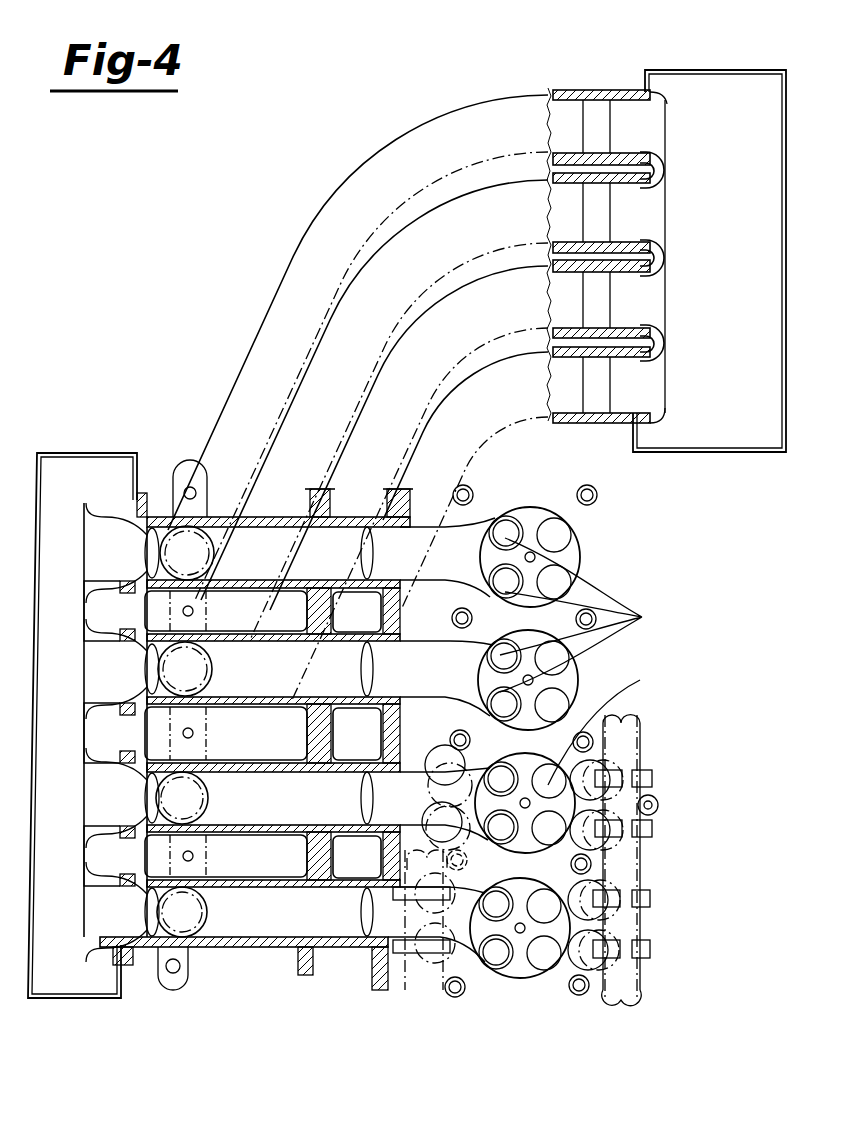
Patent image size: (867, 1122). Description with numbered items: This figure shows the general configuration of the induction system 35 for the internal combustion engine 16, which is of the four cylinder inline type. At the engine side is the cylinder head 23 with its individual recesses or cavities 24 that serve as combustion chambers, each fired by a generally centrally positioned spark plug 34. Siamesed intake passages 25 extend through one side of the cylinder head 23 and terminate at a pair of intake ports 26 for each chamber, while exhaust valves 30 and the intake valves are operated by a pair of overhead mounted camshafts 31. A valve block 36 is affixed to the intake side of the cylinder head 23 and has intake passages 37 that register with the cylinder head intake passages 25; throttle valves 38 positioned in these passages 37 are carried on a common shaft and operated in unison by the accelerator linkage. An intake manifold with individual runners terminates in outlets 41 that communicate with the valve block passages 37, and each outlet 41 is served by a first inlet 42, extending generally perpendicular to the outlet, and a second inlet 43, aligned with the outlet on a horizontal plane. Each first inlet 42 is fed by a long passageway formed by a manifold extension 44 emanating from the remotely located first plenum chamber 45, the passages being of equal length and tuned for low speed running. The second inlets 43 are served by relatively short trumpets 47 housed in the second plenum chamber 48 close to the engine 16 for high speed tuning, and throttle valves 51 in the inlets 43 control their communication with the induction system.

The internal combustion engine 16 is at (645, 562).
The cylinder head 23 is at (385, 1002).
The recesses or cavities 24 is at (536, 508).
The intake passages 25 is at (410, 632).
The intake ports 26 is at (506, 518).
The exhaust valves 30 is at (590, 661).
The overhead mounted camshafts 31 is at (647, 970).
The spark plug 34 is at (562, 545).
The induction system 35 is at (227, 969).
The valve block 36 is at (400, 493).
The valve block intake passages 37 is at (330, 512).
The throttle valves 38 is at (374, 553).
The outlets 41 is at (272, 566).
The first inlet 42 is at (203, 540).
The second inlet 43 is at (150, 525).
The manifold extension 44 is at (439, 403).
The first plenum chamber 45 is at (725, 456).
The trumpets 47 is at (100, 575).
The second plenum chamber 48 is at (83, 452).
The throttle valves 51 is at (140, 538).